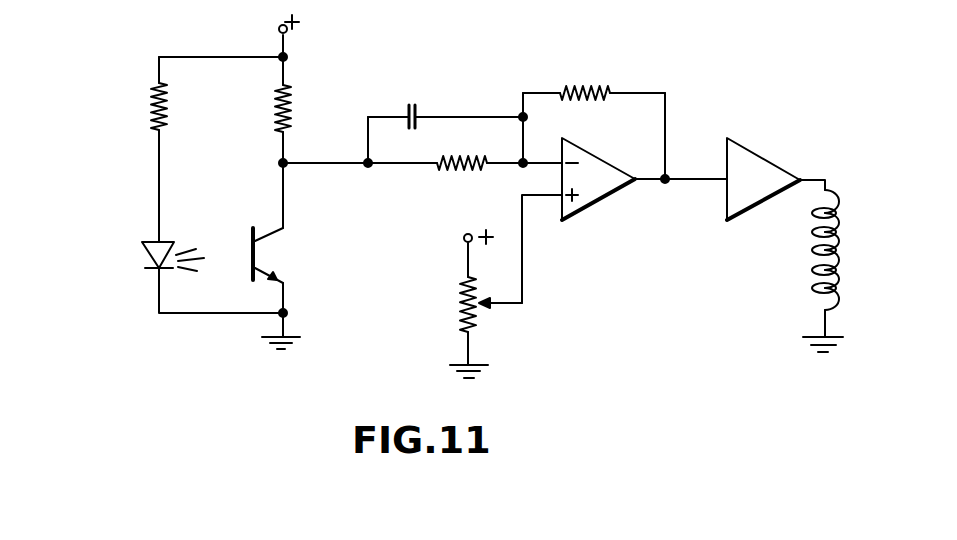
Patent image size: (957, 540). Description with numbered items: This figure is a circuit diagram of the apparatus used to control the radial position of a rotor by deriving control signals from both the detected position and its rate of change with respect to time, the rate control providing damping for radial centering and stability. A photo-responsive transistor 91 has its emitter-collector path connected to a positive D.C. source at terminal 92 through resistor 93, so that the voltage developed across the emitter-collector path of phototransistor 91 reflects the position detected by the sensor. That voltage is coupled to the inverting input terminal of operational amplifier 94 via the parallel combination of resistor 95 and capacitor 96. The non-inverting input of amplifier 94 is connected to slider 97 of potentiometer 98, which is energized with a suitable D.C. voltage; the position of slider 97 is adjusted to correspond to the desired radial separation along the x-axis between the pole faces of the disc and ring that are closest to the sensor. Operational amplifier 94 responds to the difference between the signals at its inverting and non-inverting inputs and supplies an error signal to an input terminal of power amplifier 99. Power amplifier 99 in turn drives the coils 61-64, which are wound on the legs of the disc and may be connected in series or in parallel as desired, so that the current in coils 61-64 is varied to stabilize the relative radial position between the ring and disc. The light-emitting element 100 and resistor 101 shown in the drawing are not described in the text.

The terminal 92 is at (279, 29).
The resistor 101 is at (152, 90).
The resistor 93 is at (290, 96).
The light emitting diode 100 is at (145, 246).
The photo-responsive transistor 91 is at (253, 234).
The capacitor 96 is at (418, 106).
The resistor 95 is at (455, 170).
The operational amplifier 94 is at (607, 196).
The potentiometer 98 is at (459, 290).
The slider 97 is at (479, 306).
The power amplifier 99 is at (775, 160).
The coils 61-64 is at (840, 245).